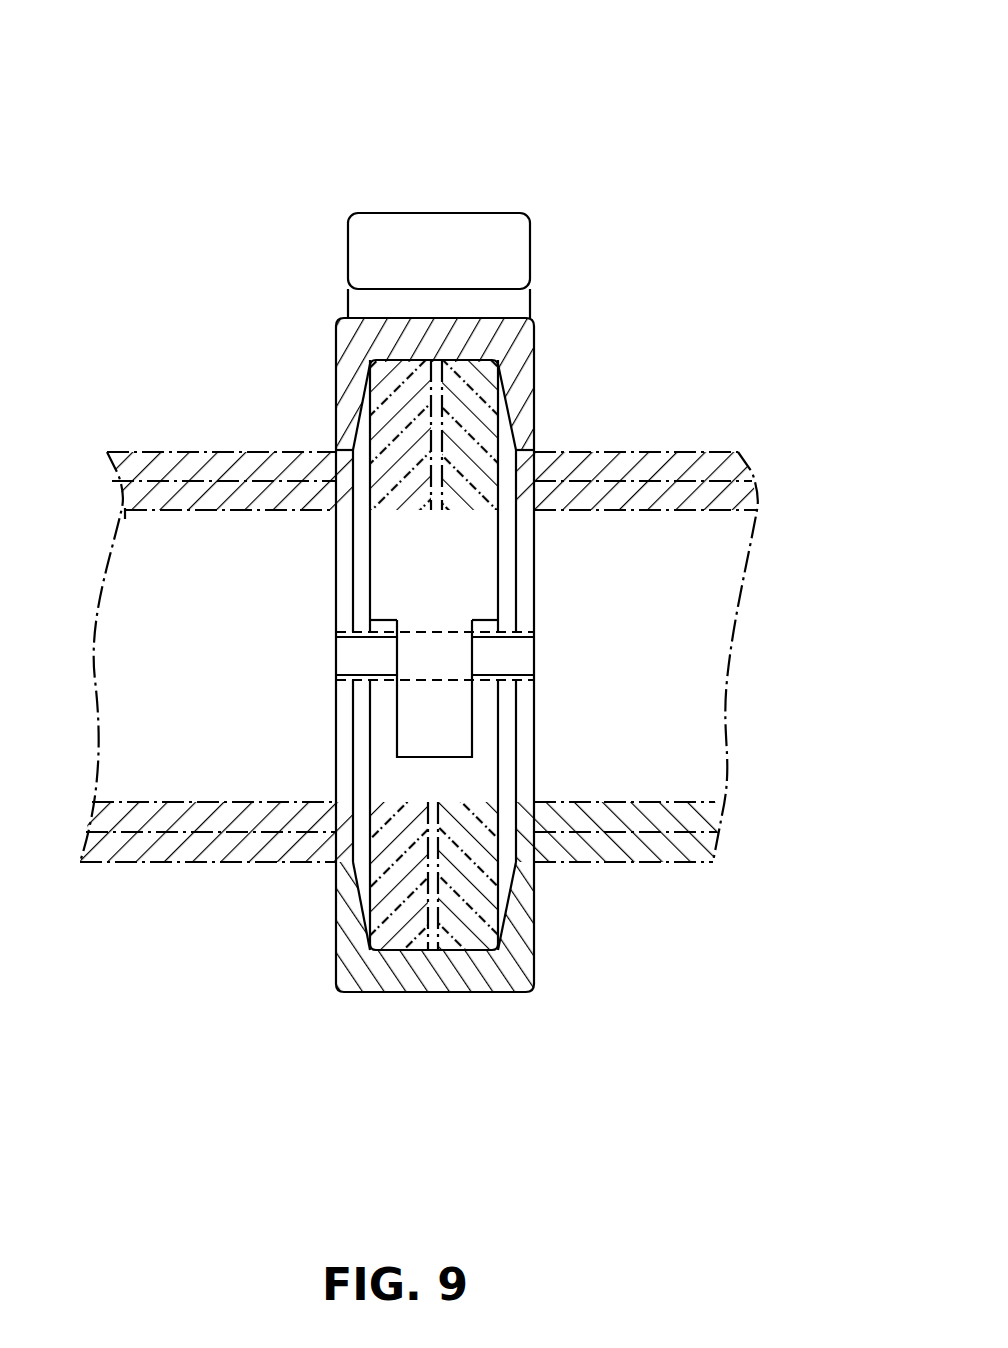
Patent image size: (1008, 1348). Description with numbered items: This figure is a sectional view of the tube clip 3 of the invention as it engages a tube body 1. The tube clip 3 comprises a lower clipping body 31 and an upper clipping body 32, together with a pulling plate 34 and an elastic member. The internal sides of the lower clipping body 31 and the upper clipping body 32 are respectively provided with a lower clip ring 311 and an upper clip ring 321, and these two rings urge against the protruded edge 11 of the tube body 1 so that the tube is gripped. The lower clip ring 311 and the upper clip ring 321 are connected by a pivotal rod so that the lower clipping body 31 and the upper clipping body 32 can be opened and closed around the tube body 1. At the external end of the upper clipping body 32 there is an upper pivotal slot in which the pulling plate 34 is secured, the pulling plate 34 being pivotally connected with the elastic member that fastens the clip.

The tube body 1 is at (177, 465).
The tube clip 3 is at (468, 593).
The protruded edge 11 is at (392, 380).
The lower clipping body 31 is at (437, 992).
The lower clip ring 311 is at (352, 884).
The upper clipping body 32 is at (348, 343).
The upper clip ring 321 is at (337, 434).
The pulling plate 34 is at (403, 213).